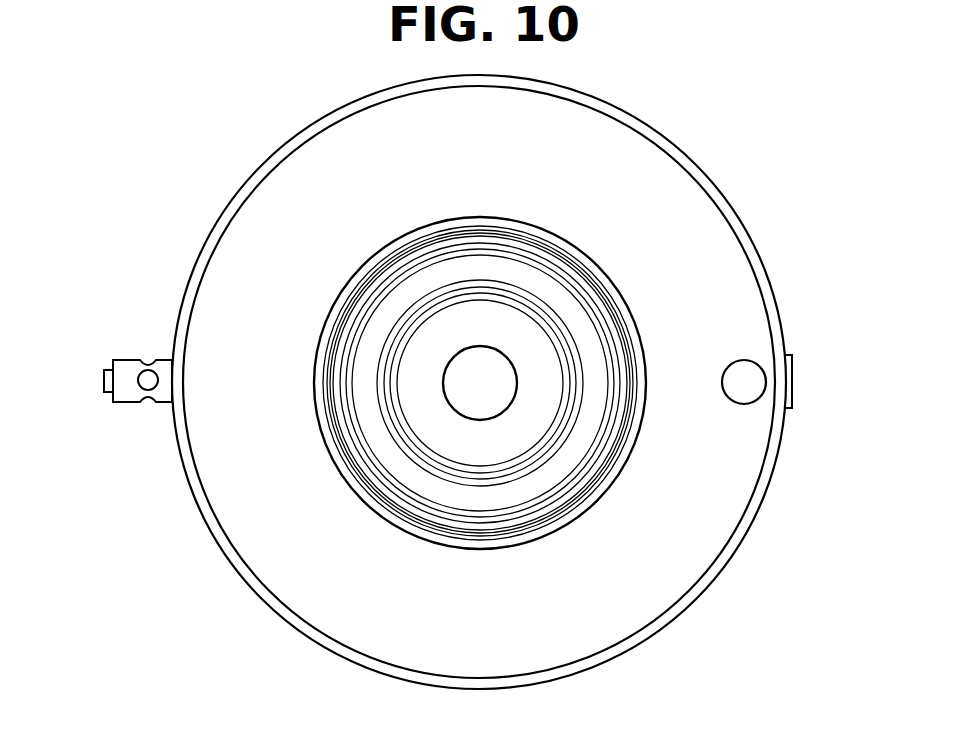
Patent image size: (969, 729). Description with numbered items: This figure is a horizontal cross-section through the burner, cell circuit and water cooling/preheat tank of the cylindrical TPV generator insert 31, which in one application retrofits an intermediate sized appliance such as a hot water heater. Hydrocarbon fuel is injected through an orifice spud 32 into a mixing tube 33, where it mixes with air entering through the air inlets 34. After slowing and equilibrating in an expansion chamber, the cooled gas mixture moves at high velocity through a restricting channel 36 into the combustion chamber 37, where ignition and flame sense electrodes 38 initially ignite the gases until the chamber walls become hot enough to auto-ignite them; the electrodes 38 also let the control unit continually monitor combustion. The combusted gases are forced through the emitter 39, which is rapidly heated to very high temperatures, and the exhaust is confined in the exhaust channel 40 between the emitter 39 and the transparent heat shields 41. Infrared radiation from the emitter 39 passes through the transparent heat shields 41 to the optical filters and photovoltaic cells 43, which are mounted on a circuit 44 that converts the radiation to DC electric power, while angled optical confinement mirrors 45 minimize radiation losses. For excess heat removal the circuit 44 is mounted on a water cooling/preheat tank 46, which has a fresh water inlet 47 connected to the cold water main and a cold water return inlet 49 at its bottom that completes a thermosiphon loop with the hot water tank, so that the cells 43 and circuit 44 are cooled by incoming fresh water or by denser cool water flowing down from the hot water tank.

The cylindrical TPV generator insert 31 is at (163, 612).
The orifice spud 32 is at (106, 378).
The mixing tube 33 is at (128, 362).
The air inlets 34 is at (148, 370).
The restricting channel 36 is at (398, 410).
The combustion chamber 37 is at (398, 423).
The ignition and flame sense electrodes 38 is at (444, 383).
The emitter 39 is at (397, 437).
The exhaust channel 40 is at (395, 455).
The transparent heat shields 41 is at (392, 470).
The optical filters and photovoltaic cells 43 is at (478, 538).
The circuit 44 is at (497, 538).
The angled optical confinement mirrors 45 is at (530, 513).
The water cooling/preheat tank 46 is at (727, 552).
The fresh water inlet 47 is at (753, 375).
The cold water return inlet 49 is at (793, 395).